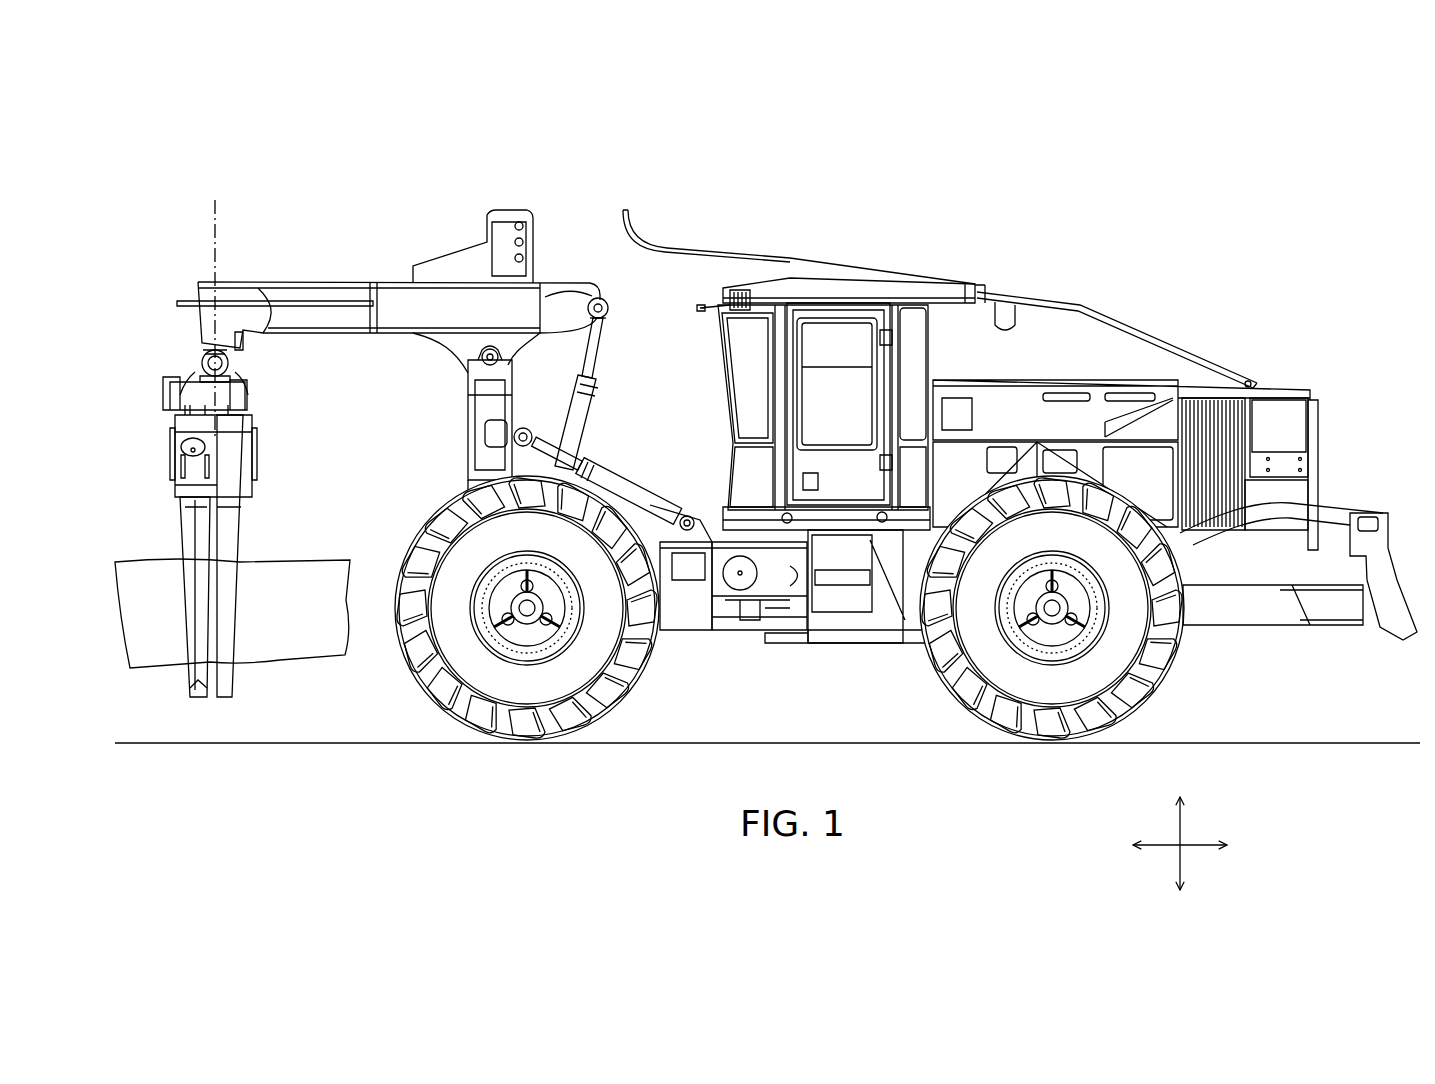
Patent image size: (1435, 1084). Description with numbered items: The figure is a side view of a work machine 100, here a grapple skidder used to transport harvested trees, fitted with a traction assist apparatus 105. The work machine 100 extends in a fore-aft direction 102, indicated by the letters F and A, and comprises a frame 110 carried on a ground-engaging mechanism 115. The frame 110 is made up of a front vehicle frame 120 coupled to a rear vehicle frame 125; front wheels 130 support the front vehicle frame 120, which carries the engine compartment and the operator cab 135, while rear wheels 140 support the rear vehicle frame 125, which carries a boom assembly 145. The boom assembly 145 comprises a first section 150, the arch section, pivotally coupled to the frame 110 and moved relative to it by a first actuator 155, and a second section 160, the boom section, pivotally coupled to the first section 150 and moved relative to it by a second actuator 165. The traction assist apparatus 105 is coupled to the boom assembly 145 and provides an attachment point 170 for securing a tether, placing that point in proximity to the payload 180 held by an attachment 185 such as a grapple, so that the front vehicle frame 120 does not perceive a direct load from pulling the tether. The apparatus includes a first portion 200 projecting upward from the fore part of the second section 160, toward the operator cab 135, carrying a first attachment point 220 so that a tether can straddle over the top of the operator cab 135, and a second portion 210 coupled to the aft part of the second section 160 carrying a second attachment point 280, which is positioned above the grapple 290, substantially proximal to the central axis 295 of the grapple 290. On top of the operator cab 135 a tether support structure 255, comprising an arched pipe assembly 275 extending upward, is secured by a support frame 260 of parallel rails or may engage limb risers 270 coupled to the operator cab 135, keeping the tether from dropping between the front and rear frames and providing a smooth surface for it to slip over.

The work machine 100 is at (1065, 134).
The fore-aft direction 102 is at (1200, 855).
The traction assist apparatus 105 is at (374, 410).
The frame 110 is at (882, 653).
The ground-engaging mechanism 115 is at (789, 645).
The front vehicle frame 120 is at (1223, 643).
The rear vehicle frame 125 is at (677, 648).
The front wheels 130 is at (1043, 746).
The operator cab 135 is at (710, 380).
The rear wheels 140 is at (520, 746).
The boom assembly 145 is at (515, 178).
The first section 150 is at (462, 437).
The first actuator 155 is at (620, 473).
The second section 160 is at (450, 242).
The second actuator 165 is at (603, 364).
The attachment point 170 is at (603, 248).
The payload 180 is at (308, 628).
The attachment 185 is at (278, 572).
The first portion 200 is at (421, 220).
The second portion 210 is at (190, 286).
The first attachment point 220 is at (547, 247).
The tether support structure 255 is at (854, 237).
The support frame 260 is at (762, 245).
The limb risers 270 is at (1171, 328).
The arched pipe assembly 275 is at (653, 226).
The second attachment point 280 is at (163, 312).
The grapple 290 is at (250, 688).
The central axis 295 is at (216, 230).